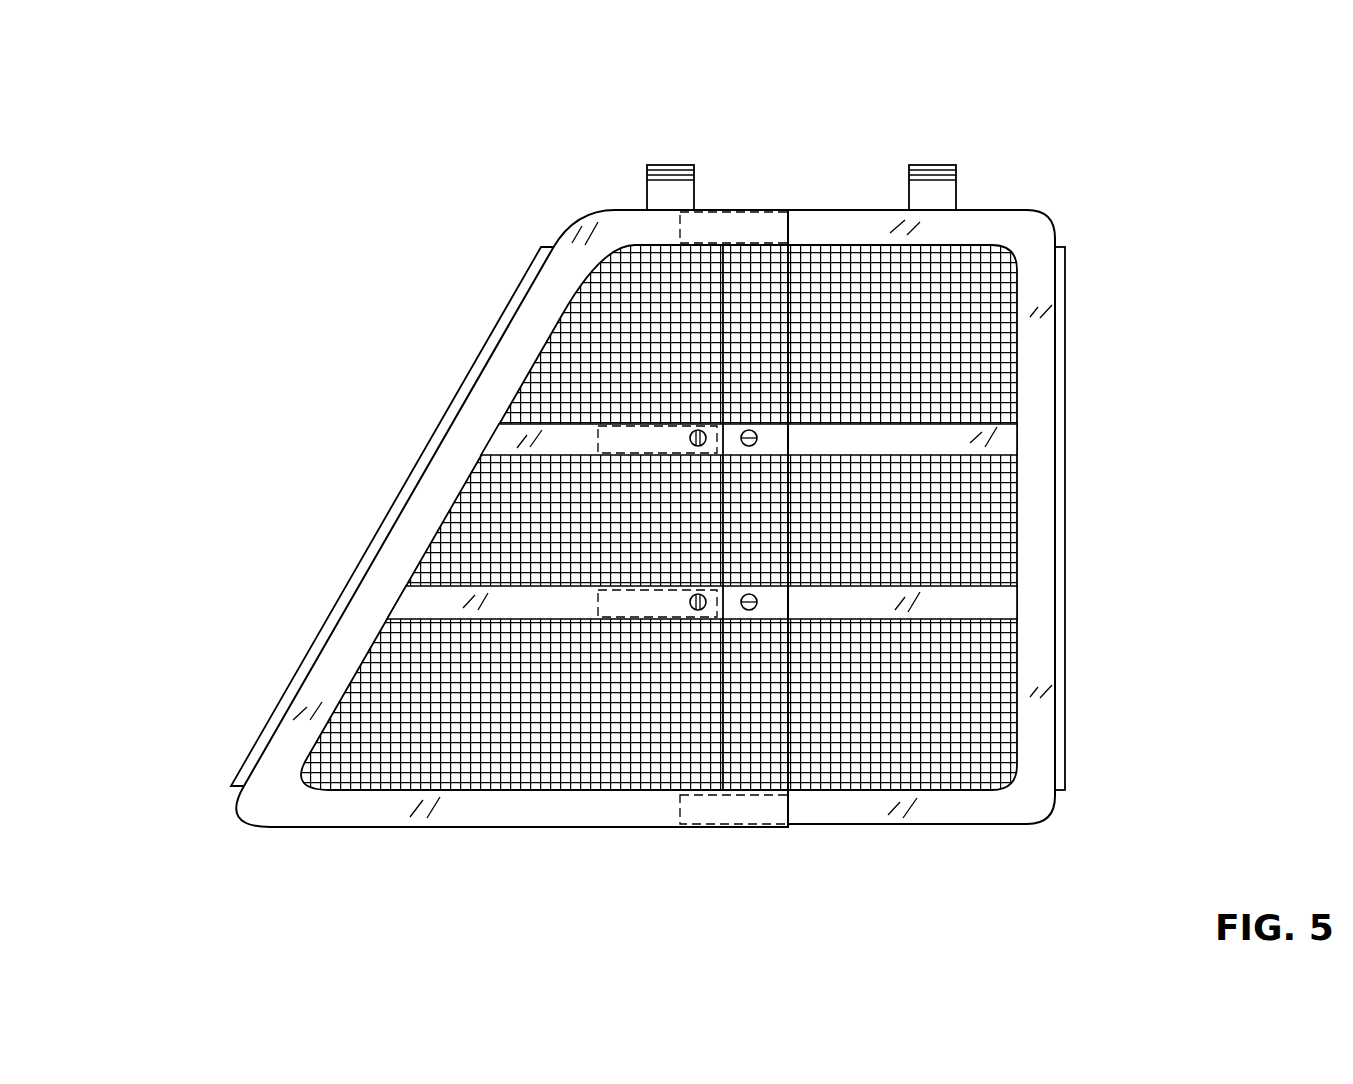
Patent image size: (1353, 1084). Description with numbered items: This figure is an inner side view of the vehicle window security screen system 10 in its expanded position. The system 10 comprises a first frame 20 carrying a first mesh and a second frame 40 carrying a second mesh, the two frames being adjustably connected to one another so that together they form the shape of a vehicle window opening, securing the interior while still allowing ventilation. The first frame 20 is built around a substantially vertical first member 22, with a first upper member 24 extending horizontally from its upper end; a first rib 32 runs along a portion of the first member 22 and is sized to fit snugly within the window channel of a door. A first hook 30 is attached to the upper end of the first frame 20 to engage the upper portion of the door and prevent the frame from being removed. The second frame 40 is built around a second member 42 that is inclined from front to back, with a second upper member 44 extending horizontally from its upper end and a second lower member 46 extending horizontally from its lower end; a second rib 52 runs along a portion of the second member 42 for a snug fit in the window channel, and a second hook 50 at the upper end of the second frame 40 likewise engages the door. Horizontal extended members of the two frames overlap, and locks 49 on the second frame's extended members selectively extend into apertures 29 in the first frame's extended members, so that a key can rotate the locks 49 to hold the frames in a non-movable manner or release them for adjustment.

The vehicle window security screen system 10 is at (205, 162).
The first frame 20 is at (985, 832).
The first member 22 is at (1040, 633).
The first upper member 24 is at (985, 218).
The aperture 29 is at (757, 432).
The first hook 30 is at (930, 165).
The first rib 32 is at (1068, 485).
The second frame 40 is at (300, 829).
The second member 42 is at (318, 690).
The second upper member 44 is at (615, 218).
The second lower member 46 is at (490, 822).
The lock 49 is at (690, 598).
The second hook 50 is at (668, 163).
The second rib 52 is at (347, 587).